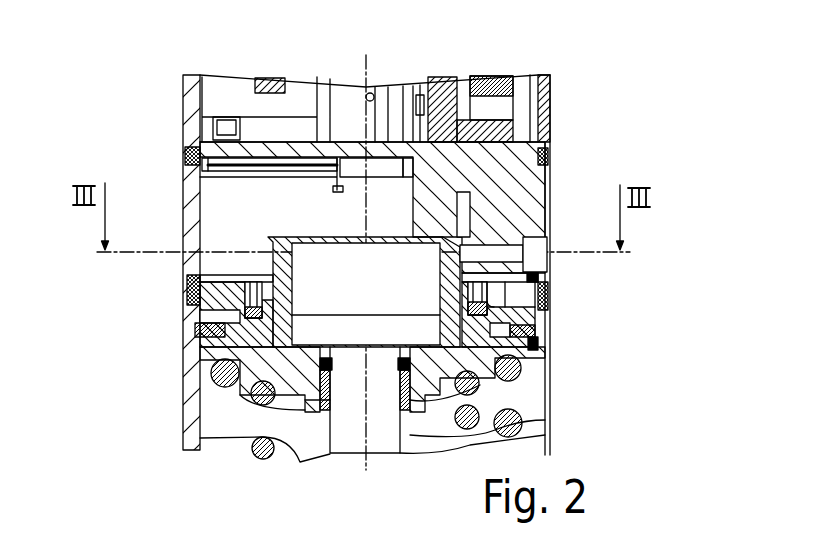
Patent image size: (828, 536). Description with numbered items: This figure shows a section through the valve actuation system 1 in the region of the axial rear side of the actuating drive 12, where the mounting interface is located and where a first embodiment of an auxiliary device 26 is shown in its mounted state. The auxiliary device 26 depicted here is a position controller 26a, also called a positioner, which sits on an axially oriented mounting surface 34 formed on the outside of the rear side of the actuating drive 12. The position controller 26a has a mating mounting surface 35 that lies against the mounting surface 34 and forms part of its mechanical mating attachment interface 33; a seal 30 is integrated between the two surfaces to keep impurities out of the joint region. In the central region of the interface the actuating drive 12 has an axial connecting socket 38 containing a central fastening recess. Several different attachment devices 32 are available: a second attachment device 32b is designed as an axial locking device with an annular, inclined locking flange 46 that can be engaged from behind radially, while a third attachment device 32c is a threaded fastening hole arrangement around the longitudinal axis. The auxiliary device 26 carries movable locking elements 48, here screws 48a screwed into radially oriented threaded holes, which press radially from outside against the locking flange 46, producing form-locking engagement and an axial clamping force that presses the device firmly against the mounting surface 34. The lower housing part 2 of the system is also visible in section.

The valve actuation system 1 is at (386, 246).
The housing body 2 is at (556, 415).
The actuating drive 12 is at (173, 422).
The auxiliary device 26 is at (445, 106).
The position controller 26a is at (556, 82).
The seal 30 is at (187, 160).
The attachment device 32 is at (172, 314).
The second attachment device 32b is at (467, 232).
The third attachment device 32c is at (239, 302).
The mating attachment interface 33 is at (515, 295).
The mounting surface 34 is at (208, 262).
The mating mounting surface 35 is at (212, 284).
The connecting socket 38 is at (282, 267).
The locking flange 46 is at (258, 245).
The locking element 48 is at (564, 208).
The screw 48a is at (503, 245).